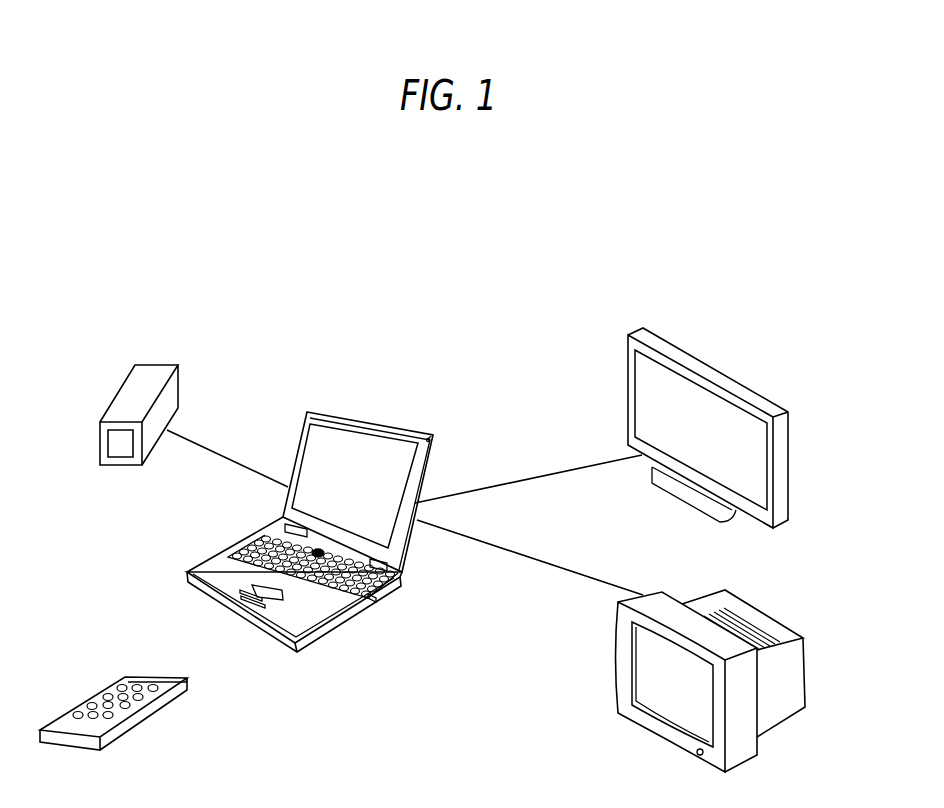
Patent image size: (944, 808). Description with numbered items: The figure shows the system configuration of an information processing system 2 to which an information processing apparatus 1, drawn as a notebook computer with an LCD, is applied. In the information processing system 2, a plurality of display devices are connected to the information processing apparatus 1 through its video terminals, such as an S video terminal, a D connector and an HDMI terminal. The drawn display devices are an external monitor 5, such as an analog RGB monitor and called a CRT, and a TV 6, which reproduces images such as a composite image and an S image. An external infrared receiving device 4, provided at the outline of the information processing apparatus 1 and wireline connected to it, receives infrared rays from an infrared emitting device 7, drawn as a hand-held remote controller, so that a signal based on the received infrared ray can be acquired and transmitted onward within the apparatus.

The information processing apparatus 1 is at (367, 421).
The information processing system 2 is at (528, 298).
The external infrared receiving device 4 is at (165, 362).
The external monitor 5 is at (760, 618).
The TV 6 is at (708, 372).
The infrared emitting device 7 is at (155, 675).